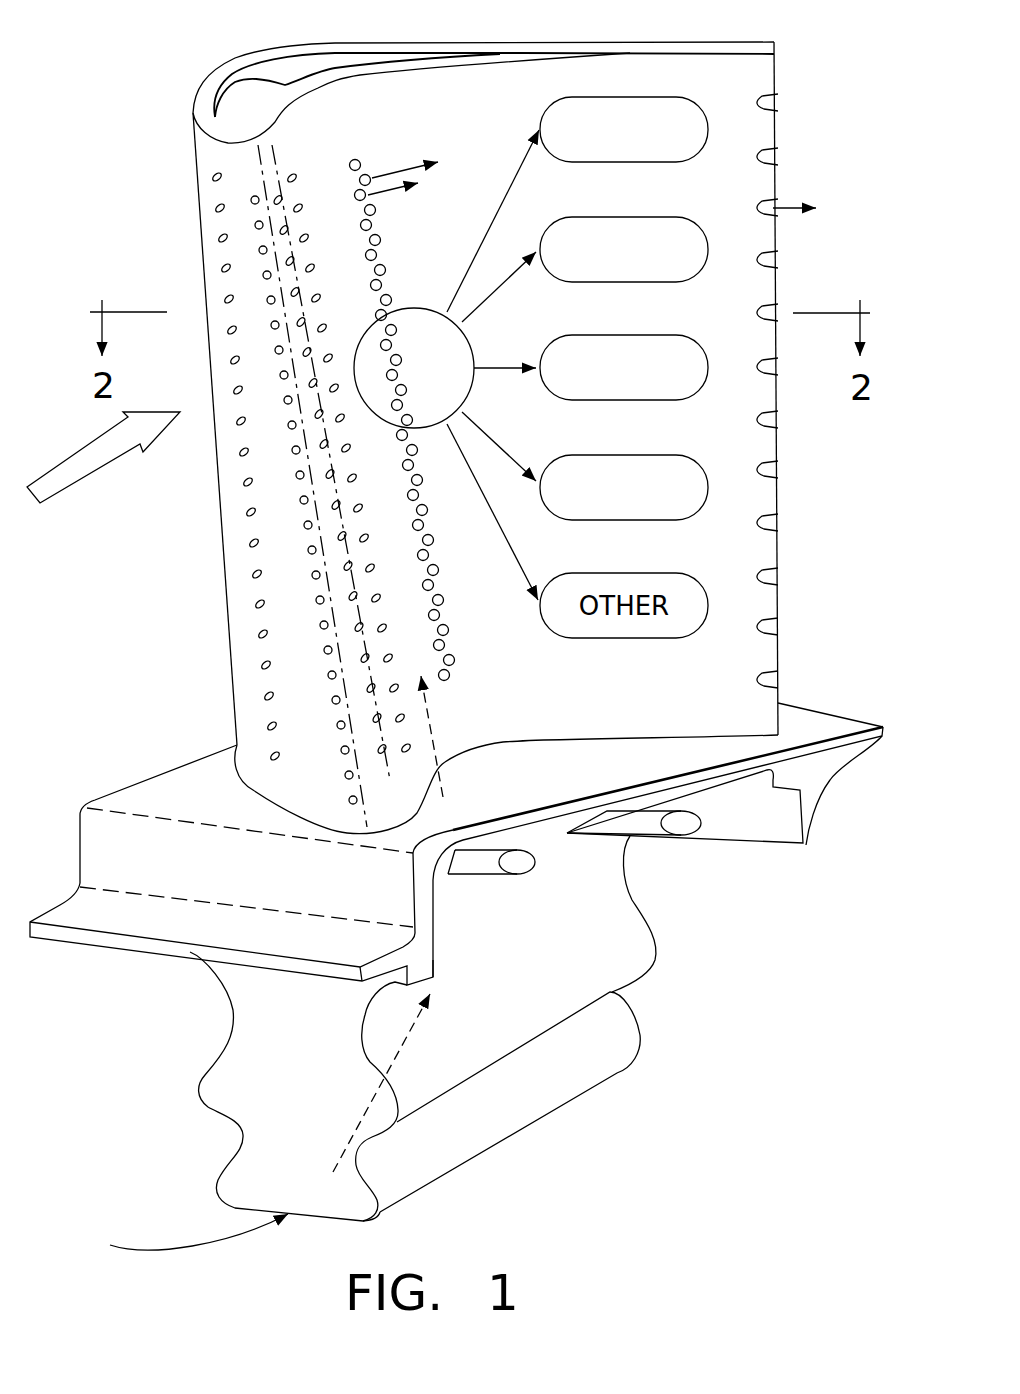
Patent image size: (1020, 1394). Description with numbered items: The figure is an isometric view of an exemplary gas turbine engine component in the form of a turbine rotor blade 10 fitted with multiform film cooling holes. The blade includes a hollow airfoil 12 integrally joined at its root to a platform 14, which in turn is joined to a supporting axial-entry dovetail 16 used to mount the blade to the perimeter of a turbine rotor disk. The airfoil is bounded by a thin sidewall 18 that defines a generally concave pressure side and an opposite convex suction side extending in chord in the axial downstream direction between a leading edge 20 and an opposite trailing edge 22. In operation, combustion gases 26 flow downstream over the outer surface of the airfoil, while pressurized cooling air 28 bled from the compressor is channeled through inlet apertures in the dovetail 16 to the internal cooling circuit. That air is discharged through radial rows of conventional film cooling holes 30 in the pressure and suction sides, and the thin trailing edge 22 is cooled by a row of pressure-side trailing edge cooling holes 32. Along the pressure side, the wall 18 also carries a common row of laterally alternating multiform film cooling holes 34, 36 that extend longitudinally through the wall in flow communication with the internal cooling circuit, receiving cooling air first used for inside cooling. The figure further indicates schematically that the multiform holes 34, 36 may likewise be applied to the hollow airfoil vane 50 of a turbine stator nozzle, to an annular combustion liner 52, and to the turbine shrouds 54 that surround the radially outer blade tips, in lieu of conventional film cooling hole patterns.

The turbine rotor blade 10 is at (168, 60).
The airfoil 12 is at (225, 613).
The platform 14 is at (160, 773).
The axial-entry dovetail 16 is at (312, 1061).
The sidewall 18 is at (453, 124).
The leading edge 20 is at (333, 570).
The trailing edge 22 is at (778, 443).
The combustion gases 26 is at (103, 463).
The cooling air 28 is at (385, 197).
The film cooling holes 30 is at (300, 498).
The trailing edge cooling holes 32 is at (767, 530).
The multiform film cooling hole 34 is at (398, 346).
The multiform film cooling hole 36 is at (407, 390).
The airfoil vane 50 is at (623, 217).
The combustion liner 52 is at (620, 400).
The turbine shroud 54 is at (623, 455).